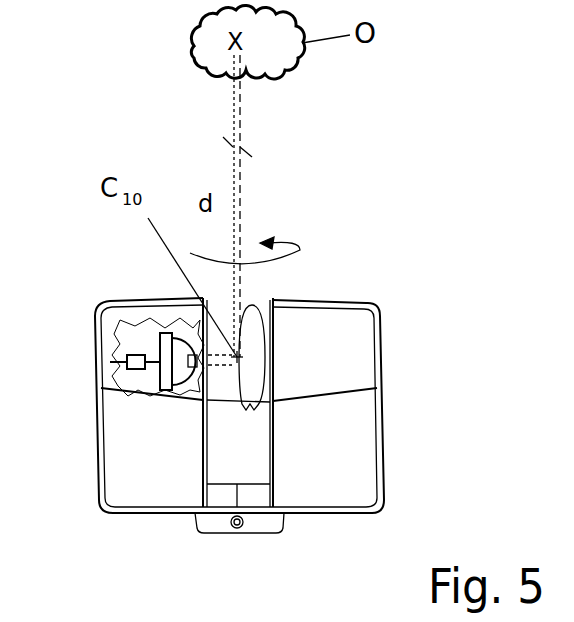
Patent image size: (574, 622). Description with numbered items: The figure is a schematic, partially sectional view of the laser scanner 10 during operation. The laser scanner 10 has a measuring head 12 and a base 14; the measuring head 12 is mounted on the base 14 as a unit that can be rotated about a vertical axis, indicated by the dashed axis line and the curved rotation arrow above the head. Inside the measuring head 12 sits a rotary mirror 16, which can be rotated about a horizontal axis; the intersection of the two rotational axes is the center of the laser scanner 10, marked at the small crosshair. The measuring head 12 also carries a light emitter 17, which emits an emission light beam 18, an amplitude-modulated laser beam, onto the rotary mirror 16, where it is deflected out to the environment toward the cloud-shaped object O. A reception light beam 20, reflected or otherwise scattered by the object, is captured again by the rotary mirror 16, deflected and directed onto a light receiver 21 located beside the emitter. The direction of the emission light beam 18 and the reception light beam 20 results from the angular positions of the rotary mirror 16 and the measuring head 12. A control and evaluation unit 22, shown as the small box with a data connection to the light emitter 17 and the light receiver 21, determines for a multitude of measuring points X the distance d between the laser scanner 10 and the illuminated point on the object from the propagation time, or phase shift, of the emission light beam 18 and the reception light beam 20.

The laser scanner 10 is at (416, 328).
The measuring head 12 is at (395, 406).
The base 14 is at (265, 522).
The rotary mirror 16 is at (236, 390).
The light emitter 17 is at (185, 378).
The emission light beam 18 is at (243, 190).
The reception light beam 20 is at (233, 105).
The light receiver 21 is at (267, 333).
The control and evaluation unit 22 is at (127, 360).